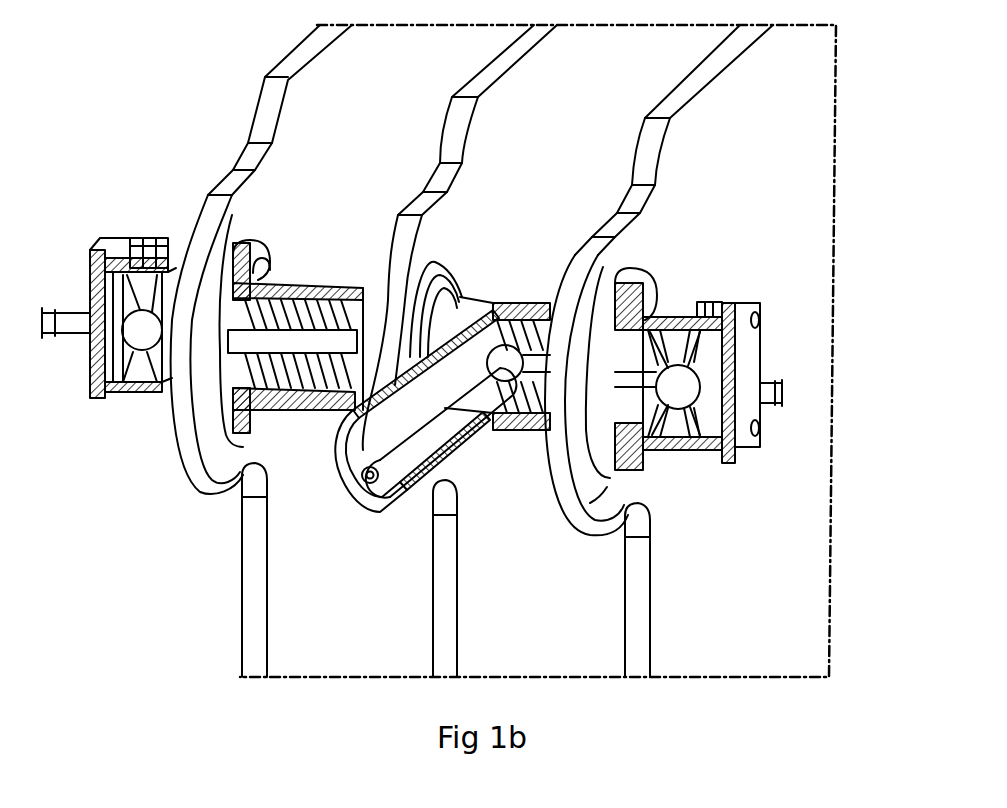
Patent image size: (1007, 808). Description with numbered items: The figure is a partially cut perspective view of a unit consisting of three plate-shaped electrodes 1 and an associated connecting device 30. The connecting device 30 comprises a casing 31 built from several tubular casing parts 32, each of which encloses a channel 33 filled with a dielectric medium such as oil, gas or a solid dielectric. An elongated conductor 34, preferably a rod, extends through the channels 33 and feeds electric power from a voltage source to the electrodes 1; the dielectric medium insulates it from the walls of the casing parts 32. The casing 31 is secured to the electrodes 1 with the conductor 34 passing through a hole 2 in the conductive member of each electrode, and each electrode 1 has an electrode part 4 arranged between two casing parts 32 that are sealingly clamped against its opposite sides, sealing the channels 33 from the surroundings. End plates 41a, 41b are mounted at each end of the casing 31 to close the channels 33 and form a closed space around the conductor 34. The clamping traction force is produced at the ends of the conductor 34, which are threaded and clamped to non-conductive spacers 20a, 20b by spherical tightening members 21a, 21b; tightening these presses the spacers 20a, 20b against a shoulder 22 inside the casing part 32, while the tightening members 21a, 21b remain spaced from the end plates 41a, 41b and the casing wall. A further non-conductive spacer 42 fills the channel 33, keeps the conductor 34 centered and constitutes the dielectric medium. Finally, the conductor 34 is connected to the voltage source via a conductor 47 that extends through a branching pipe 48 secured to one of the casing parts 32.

The plate-shaped electrode 1 is at (292, 63).
The hole 2 is at (234, 366).
The electrode part 4 is at (225, 258).
The spacer 20a is at (175, 265).
The spacer 20b is at (660, 320).
The spherical tightening member 21a is at (140, 348).
The spherical tightening member 21b is at (688, 422).
The shoulder 22 is at (627, 467).
The connecting device 30 is at (765, 250).
The casing 31 is at (509, 444).
The tubular casing part 32 is at (127, 250).
The channel 33 is at (90, 285).
The elongated conductor 34 is at (293, 343).
The end plate 41a is at (88, 380).
The end plate 41b is at (746, 360).
The spacer 42 is at (296, 392).
The conductor 47 is at (398, 470).
The branching pipe 48 is at (347, 472).